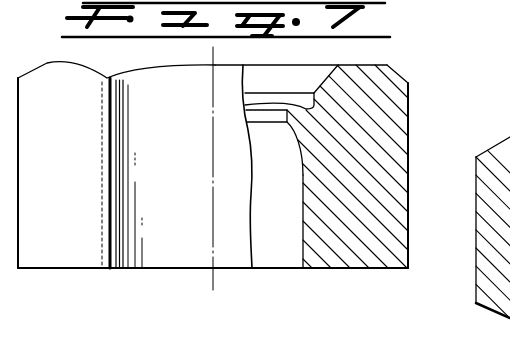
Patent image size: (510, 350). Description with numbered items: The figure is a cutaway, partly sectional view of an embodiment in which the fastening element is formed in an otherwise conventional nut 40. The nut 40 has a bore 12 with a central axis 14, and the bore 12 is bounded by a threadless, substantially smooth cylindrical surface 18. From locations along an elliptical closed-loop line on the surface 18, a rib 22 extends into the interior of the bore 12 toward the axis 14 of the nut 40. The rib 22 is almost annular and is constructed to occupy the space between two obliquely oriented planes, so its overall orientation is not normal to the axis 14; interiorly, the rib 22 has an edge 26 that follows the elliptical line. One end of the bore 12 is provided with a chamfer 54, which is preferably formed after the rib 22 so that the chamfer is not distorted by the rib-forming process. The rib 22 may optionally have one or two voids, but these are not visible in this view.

The bore 12 is at (270, 247).
The axis 14 is at (212, 276).
The cylindrical surface 18 is at (303, 248).
The rib 22 is at (245, 107).
The edge 26 is at (262, 113).
The nut 40 is at (411, 116).
The chamfer 54 is at (273, 77).